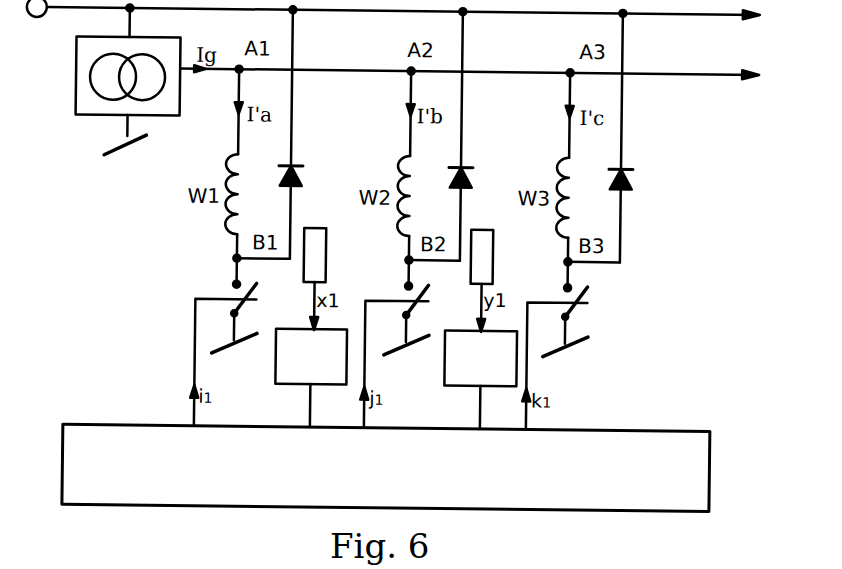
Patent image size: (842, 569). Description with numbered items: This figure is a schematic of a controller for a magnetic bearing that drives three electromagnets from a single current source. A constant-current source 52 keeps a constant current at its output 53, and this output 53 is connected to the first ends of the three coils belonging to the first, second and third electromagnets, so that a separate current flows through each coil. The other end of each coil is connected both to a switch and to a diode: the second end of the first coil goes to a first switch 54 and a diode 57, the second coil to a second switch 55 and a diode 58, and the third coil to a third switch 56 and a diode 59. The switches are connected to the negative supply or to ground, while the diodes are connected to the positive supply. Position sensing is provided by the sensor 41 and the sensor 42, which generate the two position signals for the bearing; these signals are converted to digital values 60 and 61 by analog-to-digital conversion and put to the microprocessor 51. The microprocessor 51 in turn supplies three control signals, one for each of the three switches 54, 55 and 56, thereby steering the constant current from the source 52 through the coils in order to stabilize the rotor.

The sensor 41 is at (329, 279).
The sensor 42 is at (497, 281).
The microprocessor 51 is at (119, 426).
The constant-current source 52 is at (74, 81).
The output 53 is at (236, 73).
The first switch 54 is at (230, 313).
The second switch 55 is at (401, 315).
The third switch 56 is at (560, 316).
The diode 57 is at (308, 132).
The diode 58 is at (478, 134).
The diode 59 is at (638, 136).
The digital value 60 is at (307, 370).
The digital value 61 is at (480, 371).